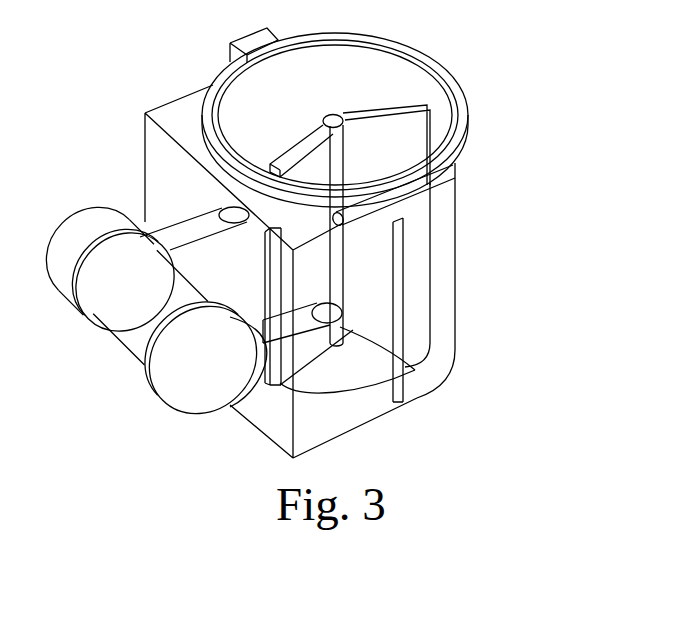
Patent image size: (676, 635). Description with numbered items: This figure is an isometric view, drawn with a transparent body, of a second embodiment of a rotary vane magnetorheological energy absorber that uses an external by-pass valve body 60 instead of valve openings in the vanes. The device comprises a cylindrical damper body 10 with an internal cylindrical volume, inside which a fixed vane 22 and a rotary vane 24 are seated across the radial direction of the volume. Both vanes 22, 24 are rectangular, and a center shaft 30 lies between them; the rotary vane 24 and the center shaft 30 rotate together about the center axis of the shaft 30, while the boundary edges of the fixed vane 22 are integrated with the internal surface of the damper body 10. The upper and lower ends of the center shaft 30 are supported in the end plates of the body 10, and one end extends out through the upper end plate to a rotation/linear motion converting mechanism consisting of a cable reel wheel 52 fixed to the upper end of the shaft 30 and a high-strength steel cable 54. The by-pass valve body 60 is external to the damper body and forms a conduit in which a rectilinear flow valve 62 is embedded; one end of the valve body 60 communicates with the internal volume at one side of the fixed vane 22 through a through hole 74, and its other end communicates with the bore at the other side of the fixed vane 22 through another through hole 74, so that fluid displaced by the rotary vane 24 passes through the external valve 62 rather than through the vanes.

The cylindrical damper body 10 is at (430, 247).
The fixed vane 22 is at (205, 130).
The rotary vane 24 is at (397, 137).
The center shaft 30 is at (287, 152).
The cable reel wheel 52 is at (265, 38).
The cable 54 is at (470, 133).
The by-pass valve body 60 is at (120, 357).
The rectilinear flow valve 62 is at (115, 330).
The through hole 74 is at (203, 210).